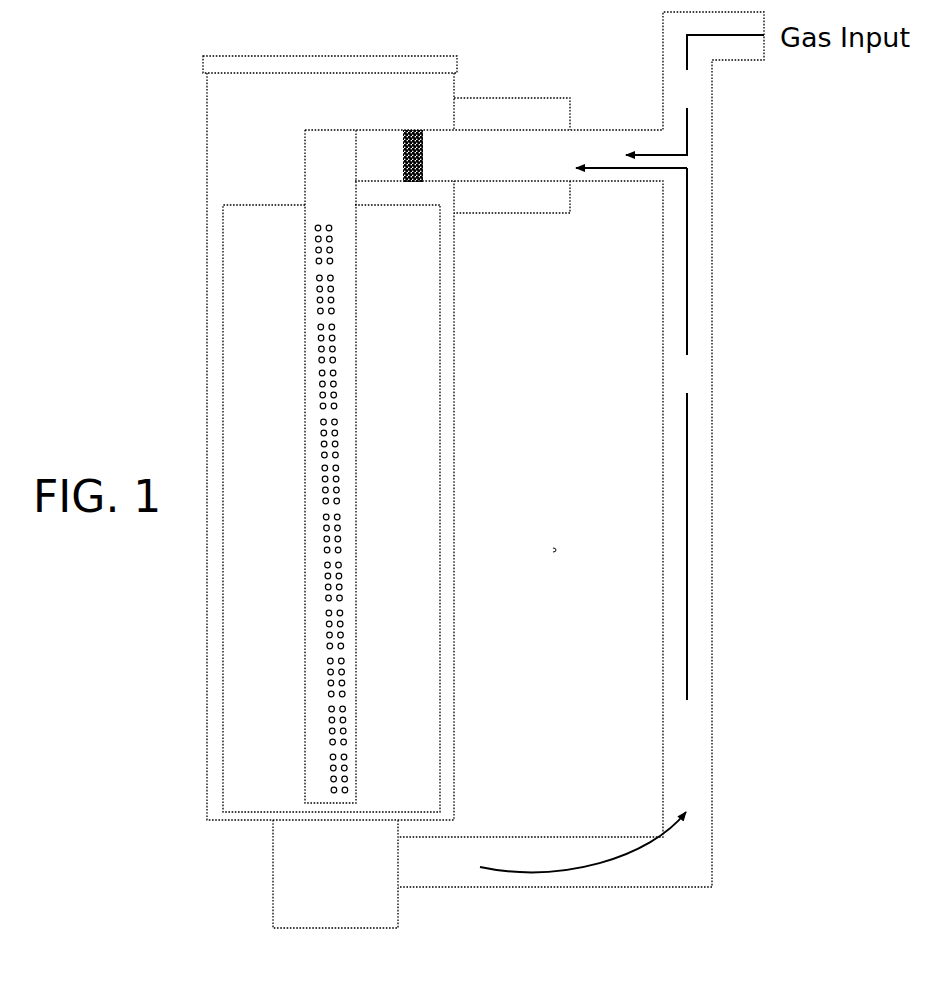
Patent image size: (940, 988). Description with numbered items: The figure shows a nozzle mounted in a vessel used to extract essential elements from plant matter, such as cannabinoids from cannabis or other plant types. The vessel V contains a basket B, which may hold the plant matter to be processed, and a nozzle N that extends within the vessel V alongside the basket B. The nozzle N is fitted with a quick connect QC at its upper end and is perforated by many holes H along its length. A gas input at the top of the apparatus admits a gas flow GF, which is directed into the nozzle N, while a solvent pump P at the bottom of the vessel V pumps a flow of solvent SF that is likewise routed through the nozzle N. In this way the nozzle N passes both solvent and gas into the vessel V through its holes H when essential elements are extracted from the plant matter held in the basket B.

The vessel V is at (203, 319).
The basket B is at (220, 446).
The nozzle N is at (352, 340).
The holes H is at (345, 495).
The quick connect QC is at (401, 123).
The gas flow GF is at (670, 101).
The flow of solvent SF is at (592, 520).
The solvent pump P is at (335, 874).